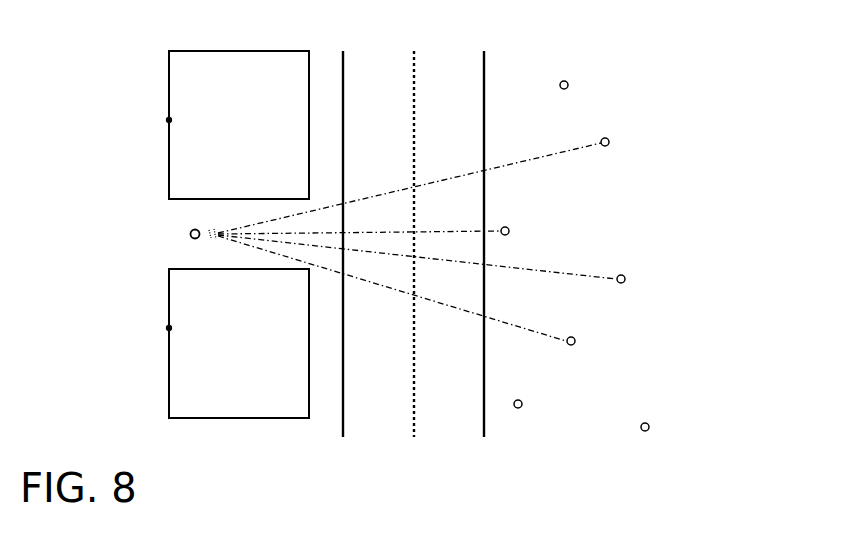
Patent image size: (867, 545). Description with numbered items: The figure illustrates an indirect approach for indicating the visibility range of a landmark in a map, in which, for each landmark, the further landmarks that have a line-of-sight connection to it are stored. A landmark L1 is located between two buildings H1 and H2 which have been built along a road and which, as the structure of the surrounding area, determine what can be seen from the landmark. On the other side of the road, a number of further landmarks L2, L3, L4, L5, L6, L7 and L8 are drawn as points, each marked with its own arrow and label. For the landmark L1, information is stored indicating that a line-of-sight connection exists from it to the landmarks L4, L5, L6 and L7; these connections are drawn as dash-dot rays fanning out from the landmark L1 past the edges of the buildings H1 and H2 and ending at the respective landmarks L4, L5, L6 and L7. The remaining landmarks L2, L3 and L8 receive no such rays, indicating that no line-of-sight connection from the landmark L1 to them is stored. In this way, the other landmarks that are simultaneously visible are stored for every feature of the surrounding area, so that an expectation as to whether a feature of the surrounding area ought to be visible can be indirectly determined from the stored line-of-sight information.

The building H1 is at (169, 328).
The building H2 is at (169, 120).
The landmark L1 is at (158, 234).
The landmark L2 is at (682, 427).
The landmark L3 is at (555, 404).
The landmark L4 is at (608, 341).
The landmark L5 is at (659, 279).
The landmark L6 is at (542, 231).
The landmark L7 is at (643, 142).
The landmark L8 is at (600, 85).